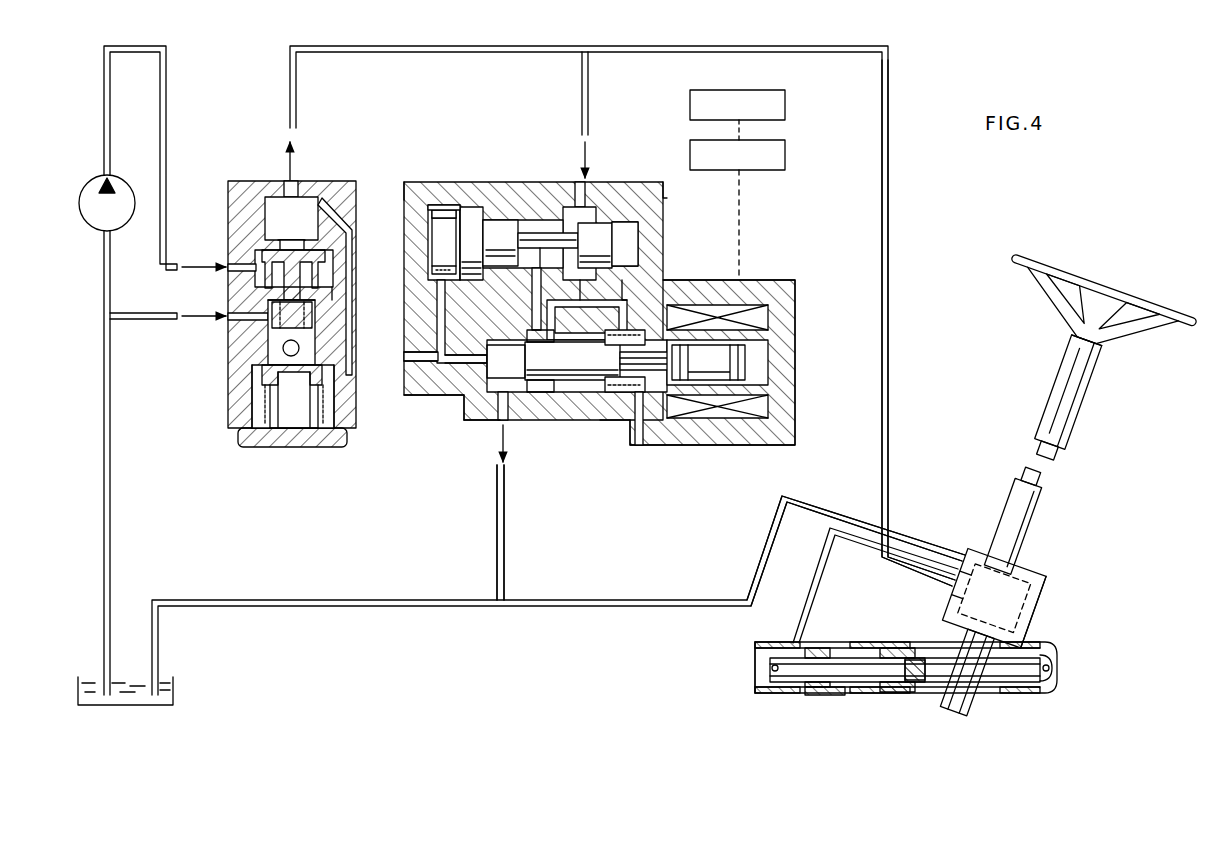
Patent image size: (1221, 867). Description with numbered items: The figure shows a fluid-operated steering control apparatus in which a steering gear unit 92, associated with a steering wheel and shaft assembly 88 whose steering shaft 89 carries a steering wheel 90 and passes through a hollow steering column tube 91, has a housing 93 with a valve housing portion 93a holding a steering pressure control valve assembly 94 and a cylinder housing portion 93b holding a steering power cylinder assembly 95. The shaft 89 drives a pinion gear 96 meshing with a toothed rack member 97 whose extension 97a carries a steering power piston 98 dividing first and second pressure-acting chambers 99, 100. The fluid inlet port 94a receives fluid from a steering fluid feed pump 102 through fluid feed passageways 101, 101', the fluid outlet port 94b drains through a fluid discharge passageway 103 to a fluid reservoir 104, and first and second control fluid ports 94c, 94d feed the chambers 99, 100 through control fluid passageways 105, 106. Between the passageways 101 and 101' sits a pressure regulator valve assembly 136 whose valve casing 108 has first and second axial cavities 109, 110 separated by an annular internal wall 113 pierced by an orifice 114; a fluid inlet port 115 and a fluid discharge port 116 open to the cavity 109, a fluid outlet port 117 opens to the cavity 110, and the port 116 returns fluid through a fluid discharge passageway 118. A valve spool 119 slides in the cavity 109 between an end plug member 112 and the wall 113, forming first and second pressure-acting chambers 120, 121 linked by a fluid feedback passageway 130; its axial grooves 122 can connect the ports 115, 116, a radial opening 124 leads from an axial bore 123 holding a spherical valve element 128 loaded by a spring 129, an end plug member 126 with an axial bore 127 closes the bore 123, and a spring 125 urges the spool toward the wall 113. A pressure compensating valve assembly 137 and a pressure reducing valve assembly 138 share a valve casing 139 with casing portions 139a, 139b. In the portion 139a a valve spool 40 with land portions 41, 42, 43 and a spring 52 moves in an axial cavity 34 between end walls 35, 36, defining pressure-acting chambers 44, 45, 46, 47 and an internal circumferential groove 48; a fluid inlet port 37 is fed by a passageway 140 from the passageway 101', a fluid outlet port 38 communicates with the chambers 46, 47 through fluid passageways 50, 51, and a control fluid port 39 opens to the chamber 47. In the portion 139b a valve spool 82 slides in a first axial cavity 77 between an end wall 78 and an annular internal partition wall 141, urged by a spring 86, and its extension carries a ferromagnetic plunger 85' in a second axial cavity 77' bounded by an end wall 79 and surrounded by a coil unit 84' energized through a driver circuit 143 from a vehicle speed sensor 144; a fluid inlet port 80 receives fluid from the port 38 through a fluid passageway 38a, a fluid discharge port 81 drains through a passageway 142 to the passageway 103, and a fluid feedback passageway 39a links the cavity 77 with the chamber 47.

The fluid feed passageway 101 is at (165, 158).
The steering fluid feed pump 102 is at (115, 180).
The fluid discharge passageway 103 is at (558, 580).
The fluid reservoir 104 is at (173, 688).
The control fluid passageway 105 is at (808, 583).
The control fluid passageway 106 is at (865, 600).
The fluid discharge passageway 118 is at (150, 320).
The valve casing 108 is at (228, 196).
The pressure regulator valve assembly 136 is at (256, 176).
The fluid outlet port 117 is at (298, 181).
The second axial cavity 110 is at (317, 208).
The annular internal wall 113 is at (268, 232).
The orifice 114 is at (290, 244).
The fluid inlet port 115 is at (228, 264).
The first pressure-acting chamber 120 is at (320, 255).
The axial grooves 122 is at (316, 272).
The valve spool 119 is at (334, 303).
The radial opening 124 is at (268, 310).
The fluid discharge port 116 is at (228, 320).
The first axial cavity 109 is at (268, 340).
The axial bore 123 is at (275, 352).
The end plug member 126 is at (260, 388).
The spherical valve element 128 is at (290, 392).
The preloaded helical compression spring 129 is at (300, 347).
The fluid feedback passageway 130 is at (336, 385).
The axial bore 127 is at (278, 432).
The second pressure-acting chamber 121 is at (294, 432).
The preloaded helical compression spring 125 is at (336, 432).
The end plug member 112 is at (300, 448).
The pressure compensating valve assembly 137 is at (410, 176).
The preloaded helical compression spring 52 is at (438, 205).
The fourth pressure-acting chamber 47 is at (452, 206).
The third circumferential land portion 43 is at (470, 192).
The third pressure-acting chamber 46 is at (490, 212).
The first pressure-acting chamber 44 is at (545, 230).
The valve spool 40 is at (552, 232).
The fluid inlet port 37 is at (580, 192).
The second pressure-acting chamber 45 is at (626, 238).
The end wall 36 is at (444, 242).
The second circumferential land portion 42 is at (507, 250).
The axial cavity 34 is at (530, 230).
The first circumferential land portion 41 is at (603, 250).
The internal circumferential groove 48 is at (588, 215).
The end wall 35 is at (666, 228).
The first casing portion 139a is at (668, 198).
The valve casing 139 is at (666, 276).
The fluid passageway 50 is at (663, 304).
The current-carrying coil unit 84' is at (753, 309).
The ferromagnetic plunger 85' is at (753, 358).
The second axial cavity 77' is at (753, 390).
The end wall 79 is at (796, 415).
The control fluid port 39 is at (437, 296).
The fluid passageway 51 is at (478, 352).
The fluid outlet port 38 is at (532, 320).
The fluid passageway 38a is at (560, 333).
The valve spool 82 is at (590, 363).
The fluid feedback passageway 39a is at (403, 357).
The preloaded helical compression spring 86 is at (632, 393).
The annular internal partition wall 141 is at (650, 418).
The end wall 78 is at (420, 397).
The fluid discharge port 81 is at (497, 422).
The fluid inlet port 80 is at (540, 392).
The first axial cavity 77 is at (616, 404).
The pressure reducing valve assembly 138 is at (457, 426).
The second casing portion 139b is at (605, 422).
The passageway 142 is at (506, 545).
The passageway 140 is at (590, 90).
The sensor 144 is at (785, 105).
The driver circuit 143 is at (785, 155).
The fluid feed passageway 101' is at (918, 323).
The steering wheel 90 is at (1088, 278).
The steering wheel and shaft assembly 88 is at (1044, 392).
The hollow steering column tube 91 is at (1090, 396).
The steering shaft 89 is at (1055, 464).
The fluid outlet port 94b is at (965, 556).
The steering pressure control valve assembly 94 is at (1025, 565).
The steering gear unit 92 is at (1068, 568).
The first control fluid port 94c is at (989, 570).
The second control fluid port 94d is at (948, 607).
The fluid inlet port 94a is at (994, 598).
The valve housing portion 93a is at (1030, 606).
The housing 93 is at (1037, 645).
The first pressure-acting chamber 99 is at (755, 664).
The steering power piston 98 is at (825, 648).
The toothed rack member 97 is at (905, 668).
The pinion gear 96 is at (1023, 667).
The longitudinal extension 97a is at (768, 676).
The second pressure-acting chamber 100 is at (832, 692).
The steering power cylinder assembly 95 is at (865, 705).
The cylinder housing portion 93b is at (895, 692).